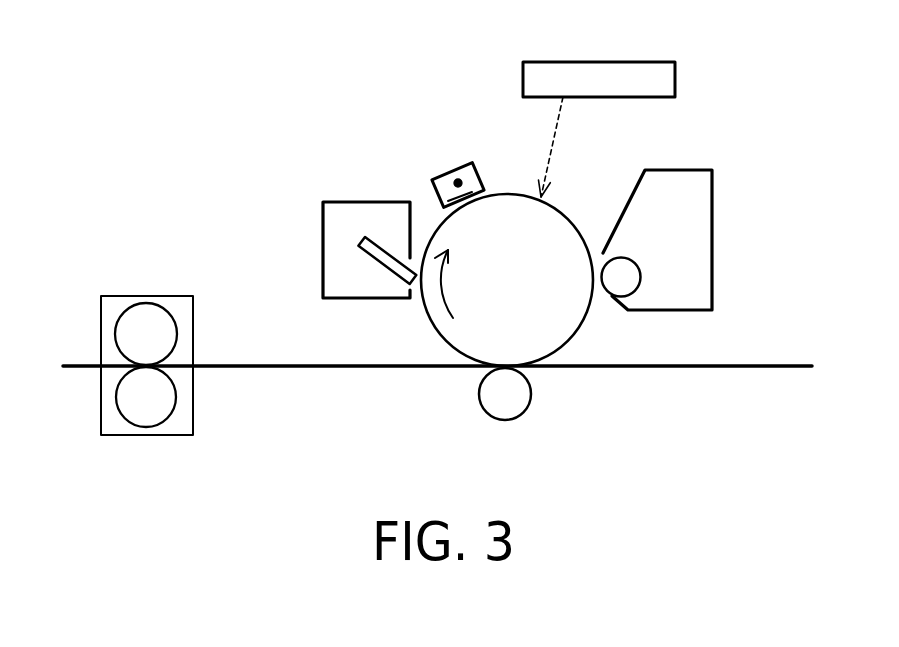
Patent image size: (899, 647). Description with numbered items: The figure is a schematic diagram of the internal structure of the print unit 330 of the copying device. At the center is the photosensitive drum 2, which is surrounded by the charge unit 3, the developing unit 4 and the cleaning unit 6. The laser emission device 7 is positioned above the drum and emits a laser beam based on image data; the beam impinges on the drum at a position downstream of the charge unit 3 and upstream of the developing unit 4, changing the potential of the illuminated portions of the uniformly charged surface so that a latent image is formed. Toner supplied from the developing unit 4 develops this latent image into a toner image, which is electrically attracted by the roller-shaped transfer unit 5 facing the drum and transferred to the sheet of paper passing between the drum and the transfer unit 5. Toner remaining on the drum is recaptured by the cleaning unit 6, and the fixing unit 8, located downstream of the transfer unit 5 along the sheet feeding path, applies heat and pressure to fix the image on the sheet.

The print unit 330 is at (219, 107).
The photosensitive drum 2 is at (573, 333).
The charge unit 3 is at (452, 174).
The developing unit 4 is at (713, 198).
The transfer unit 5 is at (507, 420).
The cleaning unit 6 is at (349, 202).
The laser emission device 7 is at (595, 62).
The fixing unit 8 is at (143, 296).